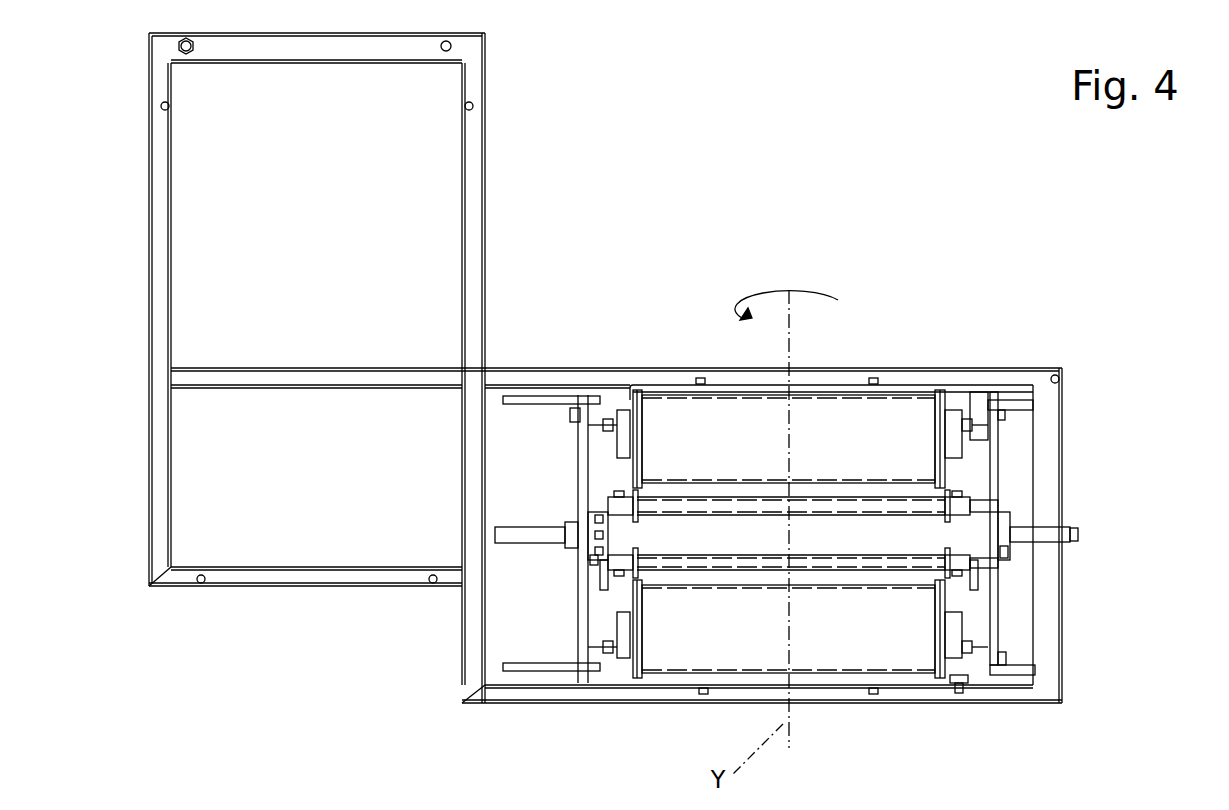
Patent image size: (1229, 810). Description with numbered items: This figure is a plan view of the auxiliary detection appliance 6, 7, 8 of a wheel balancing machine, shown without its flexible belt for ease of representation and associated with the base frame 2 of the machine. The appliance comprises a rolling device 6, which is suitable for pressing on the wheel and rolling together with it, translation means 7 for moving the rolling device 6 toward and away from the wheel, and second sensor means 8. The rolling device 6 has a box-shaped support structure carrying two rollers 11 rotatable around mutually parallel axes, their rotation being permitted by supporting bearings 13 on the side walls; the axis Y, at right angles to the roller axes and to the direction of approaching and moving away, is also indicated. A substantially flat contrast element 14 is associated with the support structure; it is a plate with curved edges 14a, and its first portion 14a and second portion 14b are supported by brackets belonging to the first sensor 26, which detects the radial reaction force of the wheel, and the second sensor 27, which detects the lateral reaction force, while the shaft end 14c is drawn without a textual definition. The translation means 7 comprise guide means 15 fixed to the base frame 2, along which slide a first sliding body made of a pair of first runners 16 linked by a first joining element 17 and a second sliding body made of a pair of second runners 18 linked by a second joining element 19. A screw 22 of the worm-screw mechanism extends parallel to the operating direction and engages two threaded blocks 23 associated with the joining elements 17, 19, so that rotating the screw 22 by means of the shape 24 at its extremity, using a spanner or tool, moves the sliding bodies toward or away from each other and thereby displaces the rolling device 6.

The base frame 2 is at (163, 235).
The rolling device 6 is at (850, 372).
The translation means 7 is at (1037, 665).
The second sensor means 8 is at (590, 480).
The rollers 11 is at (885, 427).
The supporting bearings 13 is at (975, 440).
The contrast element 14 is at (714, 546).
The curved edges 14a is at (668, 565).
The second portion 14b is at (620, 516).
The shaft end 14c is at (985, 515).
The guide means 15 is at (505, 400).
The first runners 16 is at (600, 425).
The first joining element 17 is at (585, 437).
The second runners 18 is at (962, 415).
The second joining element 19 is at (998, 592).
The screw 22 is at (1045, 527).
The threaded blocks 23 is at (1005, 555).
The shape 24 is at (1075, 540).
The first sensor 26 is at (600, 585).
The second sensor 27 is at (985, 605).